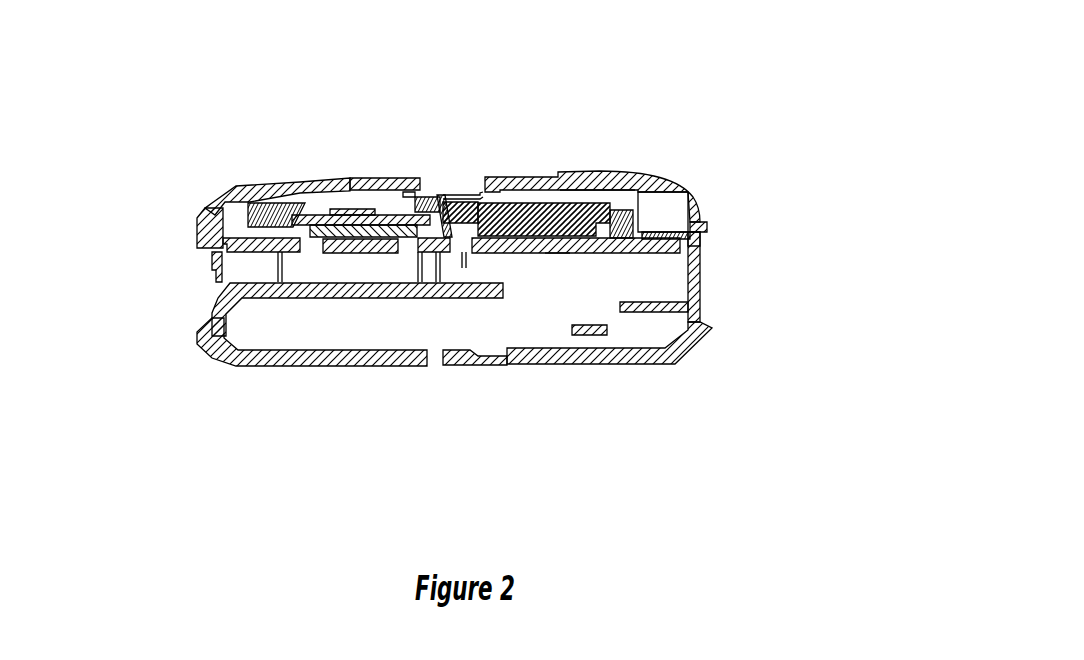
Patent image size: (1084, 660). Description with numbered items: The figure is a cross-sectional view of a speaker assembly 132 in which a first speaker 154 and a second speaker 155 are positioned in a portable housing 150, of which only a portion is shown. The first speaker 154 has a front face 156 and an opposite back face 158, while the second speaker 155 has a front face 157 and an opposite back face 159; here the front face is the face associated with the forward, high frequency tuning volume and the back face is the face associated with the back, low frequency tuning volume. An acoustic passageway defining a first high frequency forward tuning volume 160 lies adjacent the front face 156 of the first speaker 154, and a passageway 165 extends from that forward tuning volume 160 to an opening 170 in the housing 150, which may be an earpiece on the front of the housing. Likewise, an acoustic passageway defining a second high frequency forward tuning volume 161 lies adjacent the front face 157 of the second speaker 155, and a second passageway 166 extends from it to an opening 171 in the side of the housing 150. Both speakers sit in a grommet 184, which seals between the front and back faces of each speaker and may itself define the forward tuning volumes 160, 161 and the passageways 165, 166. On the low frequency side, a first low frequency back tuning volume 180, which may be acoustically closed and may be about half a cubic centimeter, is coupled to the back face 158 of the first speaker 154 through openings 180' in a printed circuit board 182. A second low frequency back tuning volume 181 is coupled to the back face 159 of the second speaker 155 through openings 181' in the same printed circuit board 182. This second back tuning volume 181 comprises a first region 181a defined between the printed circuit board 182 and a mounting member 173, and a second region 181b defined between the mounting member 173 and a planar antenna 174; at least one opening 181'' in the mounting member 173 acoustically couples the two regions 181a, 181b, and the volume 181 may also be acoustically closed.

The speaker assembly 132 is at (797, 51).
The portable housing 150 is at (690, 183).
The first speaker 154 is at (366, 207).
The second speaker 155 is at (529, 206).
The front face 156 is at (345, 190).
The front face 157 is at (518, 207).
The back face 158 is at (280, 250).
The back face 159 is at (420, 250).
The first high frequency forward tuning volume 160 is at (327, 205).
The second high frequency forward tuning volume 161 is at (592, 197).
The passageway 165 is at (383, 198).
The second passageway 166 is at (627, 196).
The opening 170 is at (450, 178).
The opening 171 is at (708, 245).
The mounting member 173 is at (702, 283).
The planar antenna 174 is at (470, 367).
The first low frequency back tuning volume 180 is at (276, 368).
The openings 180' is at (333, 342).
The second low frequency back tuning volume 181 is at (633, 364).
The openings 181' is at (502, 337).
The opening 181'' is at (586, 338).
The first region 181a is at (638, 278).
The second region 181b is at (455, 303).
The printed circuit board 182 is at (222, 240).
The grommet 184 is at (214, 209).